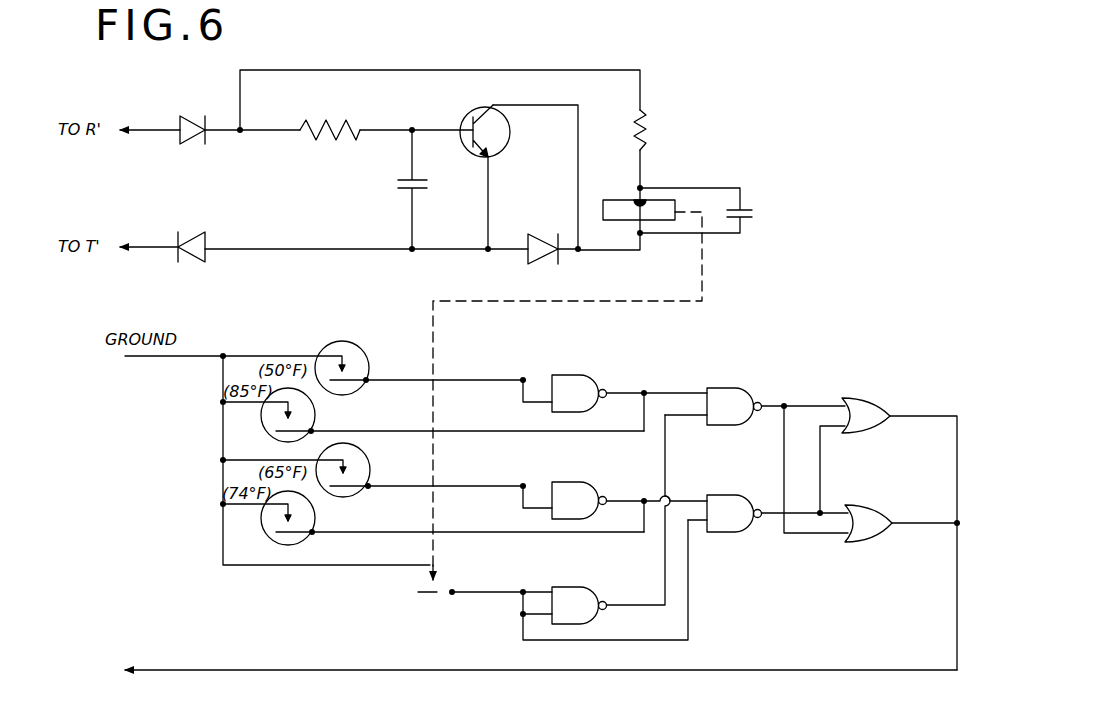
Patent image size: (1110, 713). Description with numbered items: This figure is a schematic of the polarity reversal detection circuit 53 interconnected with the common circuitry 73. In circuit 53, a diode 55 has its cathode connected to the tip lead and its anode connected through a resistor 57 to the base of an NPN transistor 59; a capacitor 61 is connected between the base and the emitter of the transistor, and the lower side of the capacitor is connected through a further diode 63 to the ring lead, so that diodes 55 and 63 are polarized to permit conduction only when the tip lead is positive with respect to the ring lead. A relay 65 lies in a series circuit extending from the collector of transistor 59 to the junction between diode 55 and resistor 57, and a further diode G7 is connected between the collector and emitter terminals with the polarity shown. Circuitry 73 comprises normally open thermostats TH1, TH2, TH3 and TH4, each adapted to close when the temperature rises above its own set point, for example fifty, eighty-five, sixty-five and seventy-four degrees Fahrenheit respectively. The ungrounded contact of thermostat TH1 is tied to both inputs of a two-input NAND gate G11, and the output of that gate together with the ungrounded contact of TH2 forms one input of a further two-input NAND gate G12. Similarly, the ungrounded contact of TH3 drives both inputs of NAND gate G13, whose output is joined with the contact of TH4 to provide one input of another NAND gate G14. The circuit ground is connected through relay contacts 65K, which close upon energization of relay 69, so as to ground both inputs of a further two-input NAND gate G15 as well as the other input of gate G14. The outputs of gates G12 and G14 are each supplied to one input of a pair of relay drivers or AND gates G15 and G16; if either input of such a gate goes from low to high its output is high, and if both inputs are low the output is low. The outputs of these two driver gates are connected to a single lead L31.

The diode 55 is at (196, 116).
The resistor 57 is at (335, 120).
The NPN transistor 59 is at (508, 124).
The polarity reversal detection circuit 53 is at (535, 164).
The capacitor 61 is at (405, 191).
The diode 63 is at (192, 231).
The diode G7 is at (543, 232).
The relay 65 is at (612, 199).
The relay 69 is at (745, 209).
The common circuitry 73 is at (567, 396).
The thermostat switch TH1 is at (357, 312).
The thermostat switch TH2 is at (316, 406).
The thermostat switch TH3 is at (363, 449).
The thermostat switch TH4 is at (316, 511).
The two-input NAND gate G11 is at (580, 375).
The two-input NAND gate G12 is at (735, 388).
The two-input NAND gate G13 is at (565, 482).
The two-input NAND gate G14 is at (745, 465).
The NAND gate / relay driver AND gate G15 is at (867, 398).
The relay driver AND gate G16 is at (862, 505).
The relay contacts 65K is at (433, 594).
The lead L31 is at (146, 661).